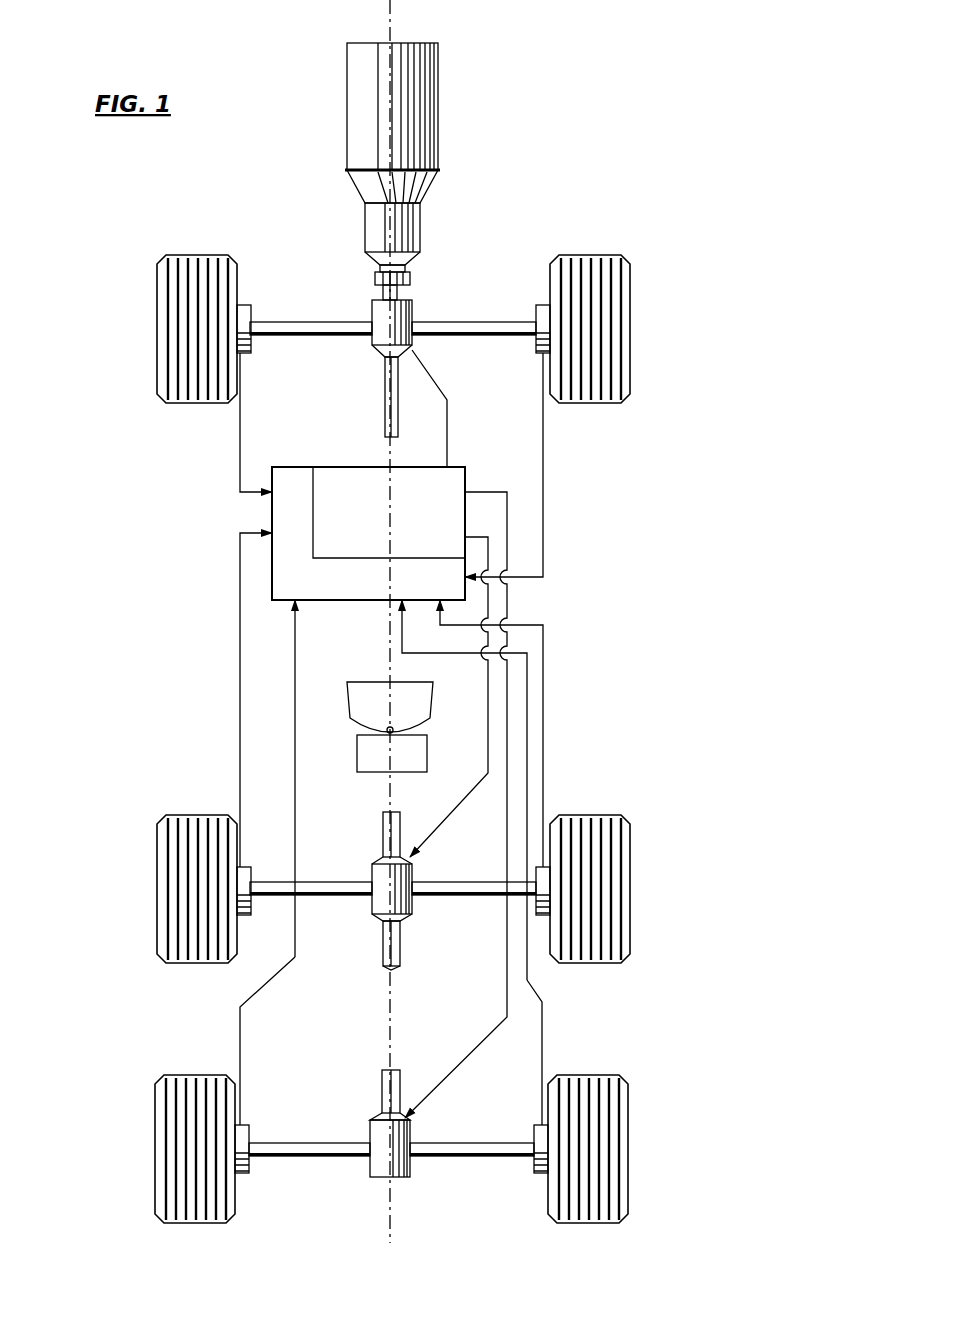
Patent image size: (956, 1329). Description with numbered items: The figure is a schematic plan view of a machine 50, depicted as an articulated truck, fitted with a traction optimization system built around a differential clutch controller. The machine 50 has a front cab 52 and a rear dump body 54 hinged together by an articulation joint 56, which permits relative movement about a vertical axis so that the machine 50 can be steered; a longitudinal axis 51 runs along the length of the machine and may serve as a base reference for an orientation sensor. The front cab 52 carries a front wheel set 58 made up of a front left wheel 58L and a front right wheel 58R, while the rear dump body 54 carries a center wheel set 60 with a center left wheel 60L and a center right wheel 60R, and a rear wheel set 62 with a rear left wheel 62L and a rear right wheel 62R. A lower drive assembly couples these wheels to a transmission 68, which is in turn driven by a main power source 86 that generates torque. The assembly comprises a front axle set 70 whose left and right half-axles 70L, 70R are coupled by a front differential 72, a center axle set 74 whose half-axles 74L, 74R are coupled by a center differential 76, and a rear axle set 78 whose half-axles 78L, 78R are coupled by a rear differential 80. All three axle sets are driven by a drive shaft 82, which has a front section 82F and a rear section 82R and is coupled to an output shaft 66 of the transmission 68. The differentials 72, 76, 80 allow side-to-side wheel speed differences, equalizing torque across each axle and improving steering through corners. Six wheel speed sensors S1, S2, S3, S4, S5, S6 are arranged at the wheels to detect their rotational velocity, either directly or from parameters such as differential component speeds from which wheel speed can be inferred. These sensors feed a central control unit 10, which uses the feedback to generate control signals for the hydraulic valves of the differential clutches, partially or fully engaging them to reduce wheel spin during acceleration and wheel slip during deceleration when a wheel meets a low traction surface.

The central control unit 10 is at (458, 477).
The machine 50 is at (598, 142).
The longitudinal axis 51 is at (391, 19).
The front cab 52 is at (176, 433).
The rear dump body 54 is at (138, 798).
The articulation joint 56 is at (395, 735).
The front wheel set 58 is at (130, 333).
The front left wheel 58L is at (192, 257).
The front right wheel 58R is at (620, 258).
The center wheel set 60 is at (130, 885).
The center left wheel 60L is at (160, 851).
The center right wheel 60R is at (625, 852).
The rear wheel set 62 is at (130, 1154).
The rear left wheel 62L is at (160, 1102).
The rear right wheel 62R is at (622, 1100).
The output shaft 66 is at (400, 292).
The transmission 68 is at (405, 228).
The front axle set 70 is at (409, 278).
The left half-axle 70L is at (305, 322).
The right half-axle 70R is at (520, 322).
The front differential 72 is at (385, 338).
The center axle set 74 is at (393, 841).
The left half-axle 74L is at (330, 882).
The right half-axle 74R is at (478, 882).
The center differential 76 is at (385, 905).
The rear axle set 78 is at (391, 1116).
The left half-axle 78L is at (290, 1143).
The right half-axle 78R is at (478, 1143).
The rear differential 80 is at (395, 1180).
The drive shaft 82 is at (383, 433).
The front section 82F is at (388, 398).
The rear section 82R is at (398, 950).
The main power source 86 is at (426, 122).
The wheel speed sensor S1 is at (541, 354).
The wheel speed sensor S2 is at (243, 305).
The wheel speed sensor S3 is at (542, 918).
The wheel speed sensor S4 is at (250, 915).
The wheel speed sensor S5 is at (536, 1173).
The wheel speed sensor S6 is at (250, 1173).